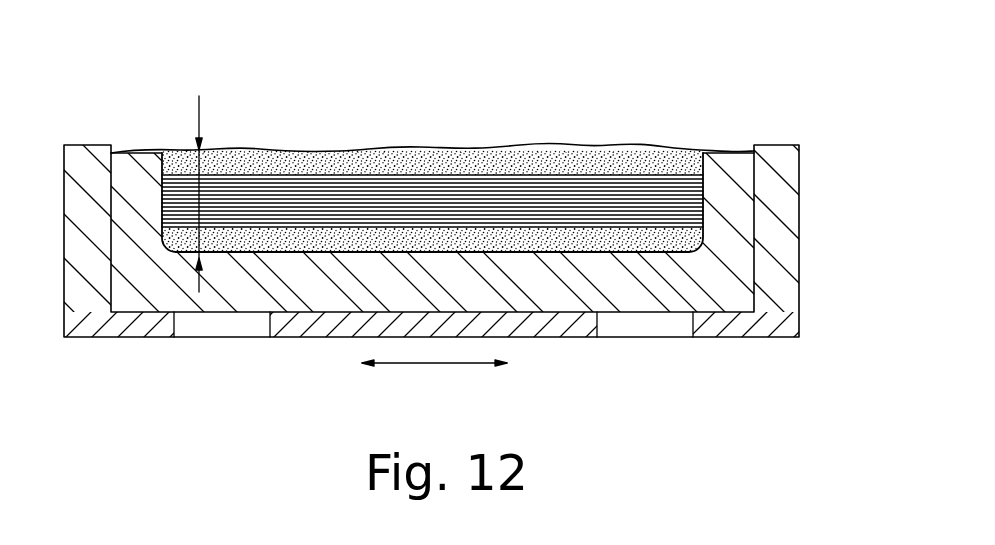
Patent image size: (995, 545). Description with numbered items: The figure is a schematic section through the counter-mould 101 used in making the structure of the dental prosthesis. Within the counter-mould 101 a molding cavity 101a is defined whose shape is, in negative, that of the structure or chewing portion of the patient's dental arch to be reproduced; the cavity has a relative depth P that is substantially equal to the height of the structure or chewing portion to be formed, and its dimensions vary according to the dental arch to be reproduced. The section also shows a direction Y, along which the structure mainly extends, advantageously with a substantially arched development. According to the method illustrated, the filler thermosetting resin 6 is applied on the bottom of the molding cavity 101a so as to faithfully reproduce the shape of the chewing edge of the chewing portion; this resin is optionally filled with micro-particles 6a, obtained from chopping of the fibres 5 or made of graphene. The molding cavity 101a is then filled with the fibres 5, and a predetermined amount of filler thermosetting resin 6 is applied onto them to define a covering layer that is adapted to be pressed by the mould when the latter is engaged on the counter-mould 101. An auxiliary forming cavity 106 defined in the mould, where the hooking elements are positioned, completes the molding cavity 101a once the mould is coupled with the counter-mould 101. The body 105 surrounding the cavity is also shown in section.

The fibres 5 is at (402, 183).
The filler thermosetting resin 6 is at (432, 239).
The micro-particles 6a is at (287, 157).
The counter-mould 101 is at (752, 338).
The molding cavity 101a is at (277, 253).
The mold block 105 is at (727, 152).
The auxiliary forming cavity 106 is at (622, 243).
The depth P is at (199, 106).
The direction Y is at (432, 364).